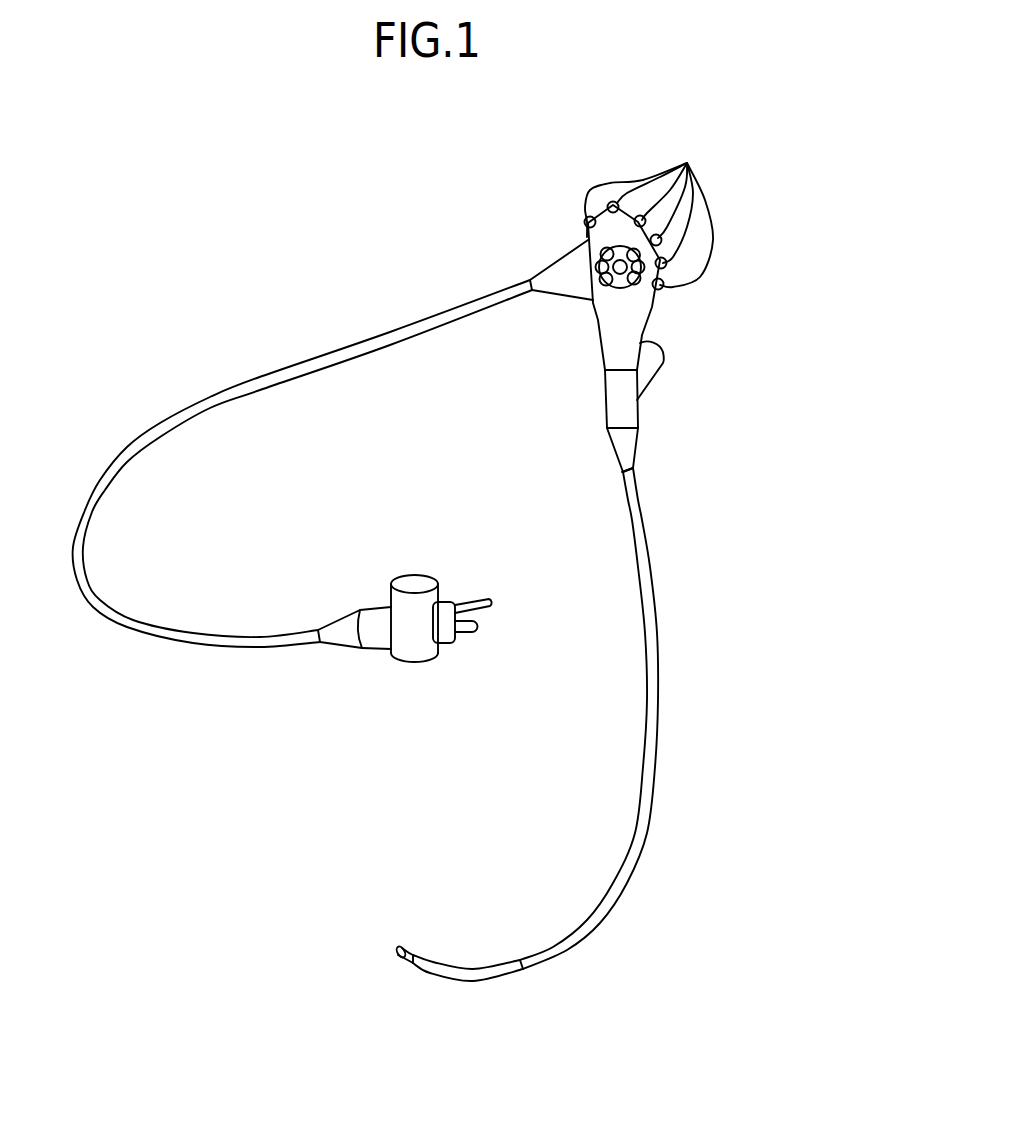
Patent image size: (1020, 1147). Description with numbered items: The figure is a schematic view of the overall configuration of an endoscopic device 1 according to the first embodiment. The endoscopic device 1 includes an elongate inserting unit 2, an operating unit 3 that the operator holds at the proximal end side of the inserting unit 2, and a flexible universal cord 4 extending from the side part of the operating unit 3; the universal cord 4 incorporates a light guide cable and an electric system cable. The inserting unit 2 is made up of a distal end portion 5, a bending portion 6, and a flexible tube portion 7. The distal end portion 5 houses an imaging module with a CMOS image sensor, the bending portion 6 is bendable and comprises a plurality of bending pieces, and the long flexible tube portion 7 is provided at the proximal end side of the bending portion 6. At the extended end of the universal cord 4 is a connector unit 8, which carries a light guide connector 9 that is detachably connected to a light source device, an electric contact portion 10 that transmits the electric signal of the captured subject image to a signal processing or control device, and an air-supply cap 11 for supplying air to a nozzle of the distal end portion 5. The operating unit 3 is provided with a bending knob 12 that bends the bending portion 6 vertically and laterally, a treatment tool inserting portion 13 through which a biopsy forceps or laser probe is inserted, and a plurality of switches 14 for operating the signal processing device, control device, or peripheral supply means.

The endoscopic device 1 is at (365, 245).
The inserting unit 2 is at (670, 773).
The operating unit 3 is at (698, 298).
The universal cord 4 is at (237, 370).
The distal end portion 5 is at (410, 950).
The bending portion 6 is at (482, 967).
The flexible tube portion 7 is at (633, 823).
The connector unit 8 is at (403, 682).
The light guide connector 9 is at (483, 598).
The electric contact portion 10 is at (415, 584).
The air-supply cap 11 is at (480, 623).
The bending knob 12 is at (600, 253).
The treatment tool inserting portion 13 is at (657, 343).
The switches 14 is at (649, 214).